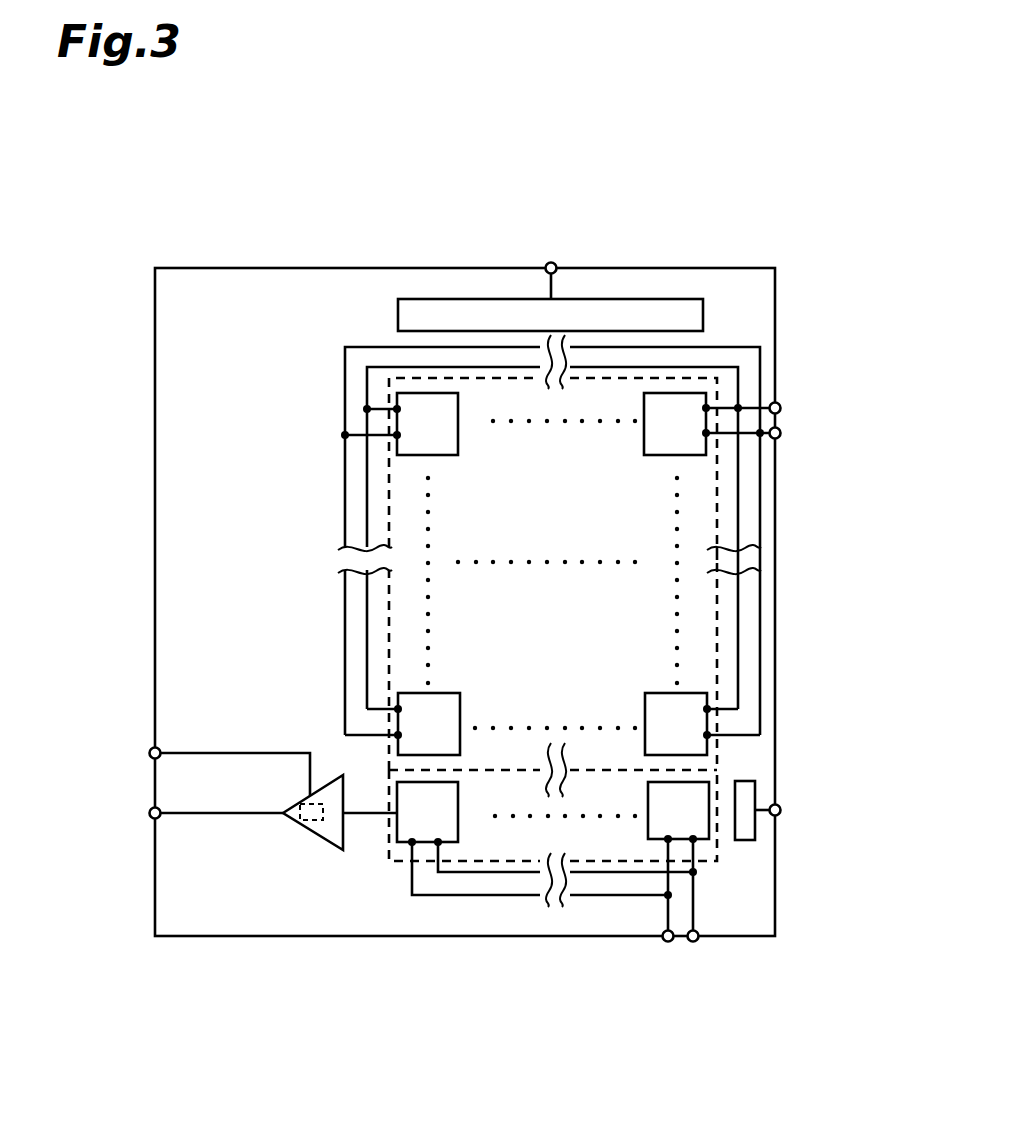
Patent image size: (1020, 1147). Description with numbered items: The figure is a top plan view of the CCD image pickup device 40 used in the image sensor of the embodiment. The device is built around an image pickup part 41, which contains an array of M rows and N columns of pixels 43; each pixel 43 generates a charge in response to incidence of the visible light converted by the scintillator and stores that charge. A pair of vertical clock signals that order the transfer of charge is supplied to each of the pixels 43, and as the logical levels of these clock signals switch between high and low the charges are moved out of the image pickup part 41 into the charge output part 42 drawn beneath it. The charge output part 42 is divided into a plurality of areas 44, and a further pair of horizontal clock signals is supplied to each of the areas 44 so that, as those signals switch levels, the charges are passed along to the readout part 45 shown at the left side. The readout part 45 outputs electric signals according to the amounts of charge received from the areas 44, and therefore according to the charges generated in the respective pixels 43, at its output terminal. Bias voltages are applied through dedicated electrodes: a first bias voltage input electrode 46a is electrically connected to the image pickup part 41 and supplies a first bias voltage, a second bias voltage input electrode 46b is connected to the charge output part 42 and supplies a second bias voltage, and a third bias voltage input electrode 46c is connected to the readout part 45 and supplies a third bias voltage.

The CCD image pickup device 40 is at (818, 278).
The image pickup part 41 is at (714, 378).
The charge output part 42 is at (717, 775).
The pixels 43 is at (667, 400).
The areas 44 is at (410, 825).
The readout part 45 is at (333, 830).
The first bias voltage input electrode 46a is at (468, 310).
The second bias voltage input electrode 46b is at (748, 828).
The third bias voltage input electrode 46c is at (303, 822).